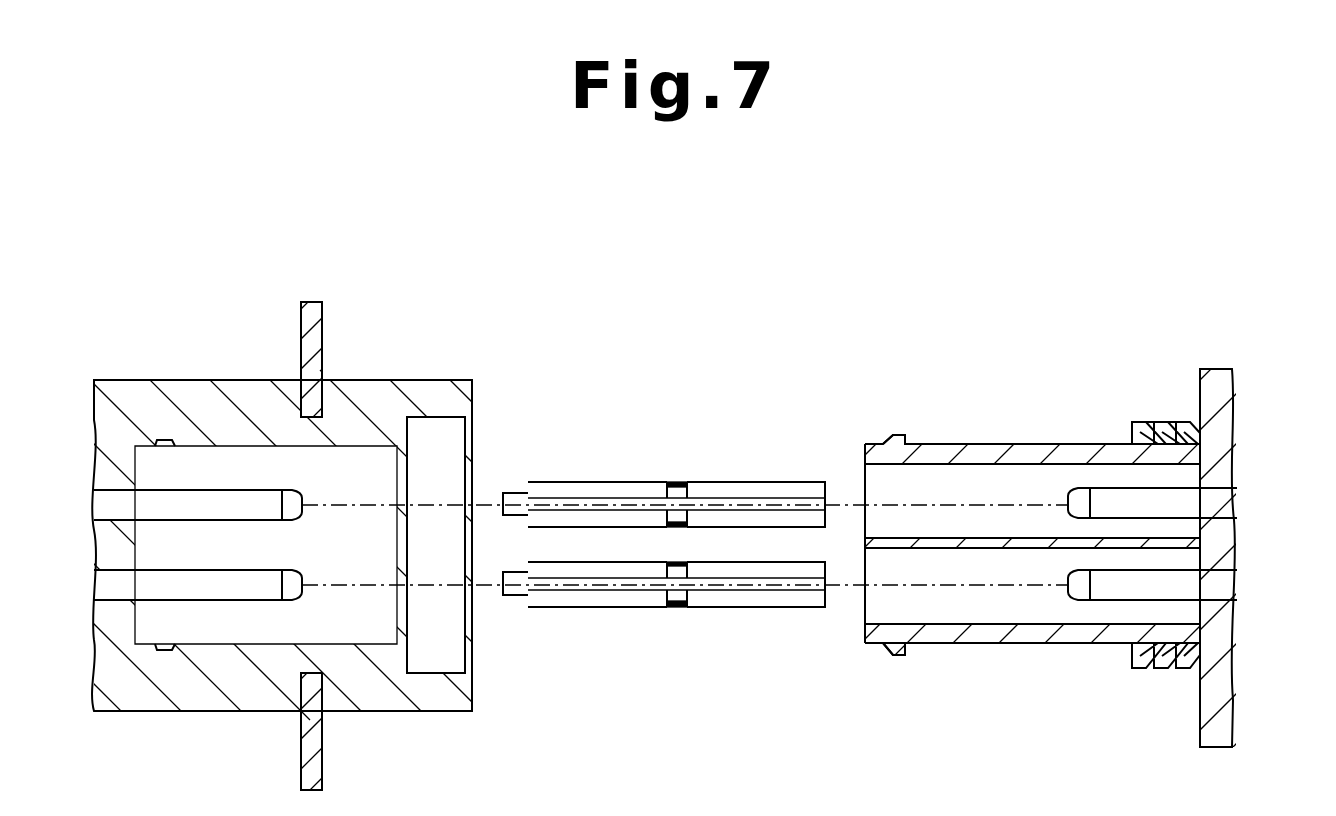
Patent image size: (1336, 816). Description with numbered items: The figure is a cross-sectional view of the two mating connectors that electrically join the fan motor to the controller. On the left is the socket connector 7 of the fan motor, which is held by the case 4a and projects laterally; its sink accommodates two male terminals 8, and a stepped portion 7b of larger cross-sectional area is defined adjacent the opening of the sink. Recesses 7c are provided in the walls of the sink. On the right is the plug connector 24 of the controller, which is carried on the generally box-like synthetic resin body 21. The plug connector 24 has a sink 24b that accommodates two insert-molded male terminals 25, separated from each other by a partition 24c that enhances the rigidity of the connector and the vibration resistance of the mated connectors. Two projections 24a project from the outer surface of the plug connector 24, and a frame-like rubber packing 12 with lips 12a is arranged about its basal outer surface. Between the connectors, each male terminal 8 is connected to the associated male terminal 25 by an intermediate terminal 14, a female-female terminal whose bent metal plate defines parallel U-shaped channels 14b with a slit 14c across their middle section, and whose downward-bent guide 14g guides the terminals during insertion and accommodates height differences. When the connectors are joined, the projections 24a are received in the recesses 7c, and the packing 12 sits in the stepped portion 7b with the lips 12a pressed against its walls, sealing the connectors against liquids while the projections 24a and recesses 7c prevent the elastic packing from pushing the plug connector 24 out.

The socket connector 7 is at (418, 380).
The stepped portion 7b is at (465, 421).
The recesses 7c is at (160, 438).
The case 4a is at (300, 312).
The male terminals 8 is at (270, 572).
The intermediate terminal 14 is at (780, 482).
The U-shaped channels 14b is at (600, 521).
The slit 14c is at (677, 482).
The guide 14g is at (513, 574).
The plug connector 24 is at (960, 444).
The projections 24a is at (895, 436).
The sink 24b is at (1038, 643).
The partition 24c is at (898, 549).
The rubber packing 12 is at (1128, 432).
The lips 12a is at (1172, 420).
The body 21 is at (1232, 718).
The male terminals 25 is at (1232, 585).